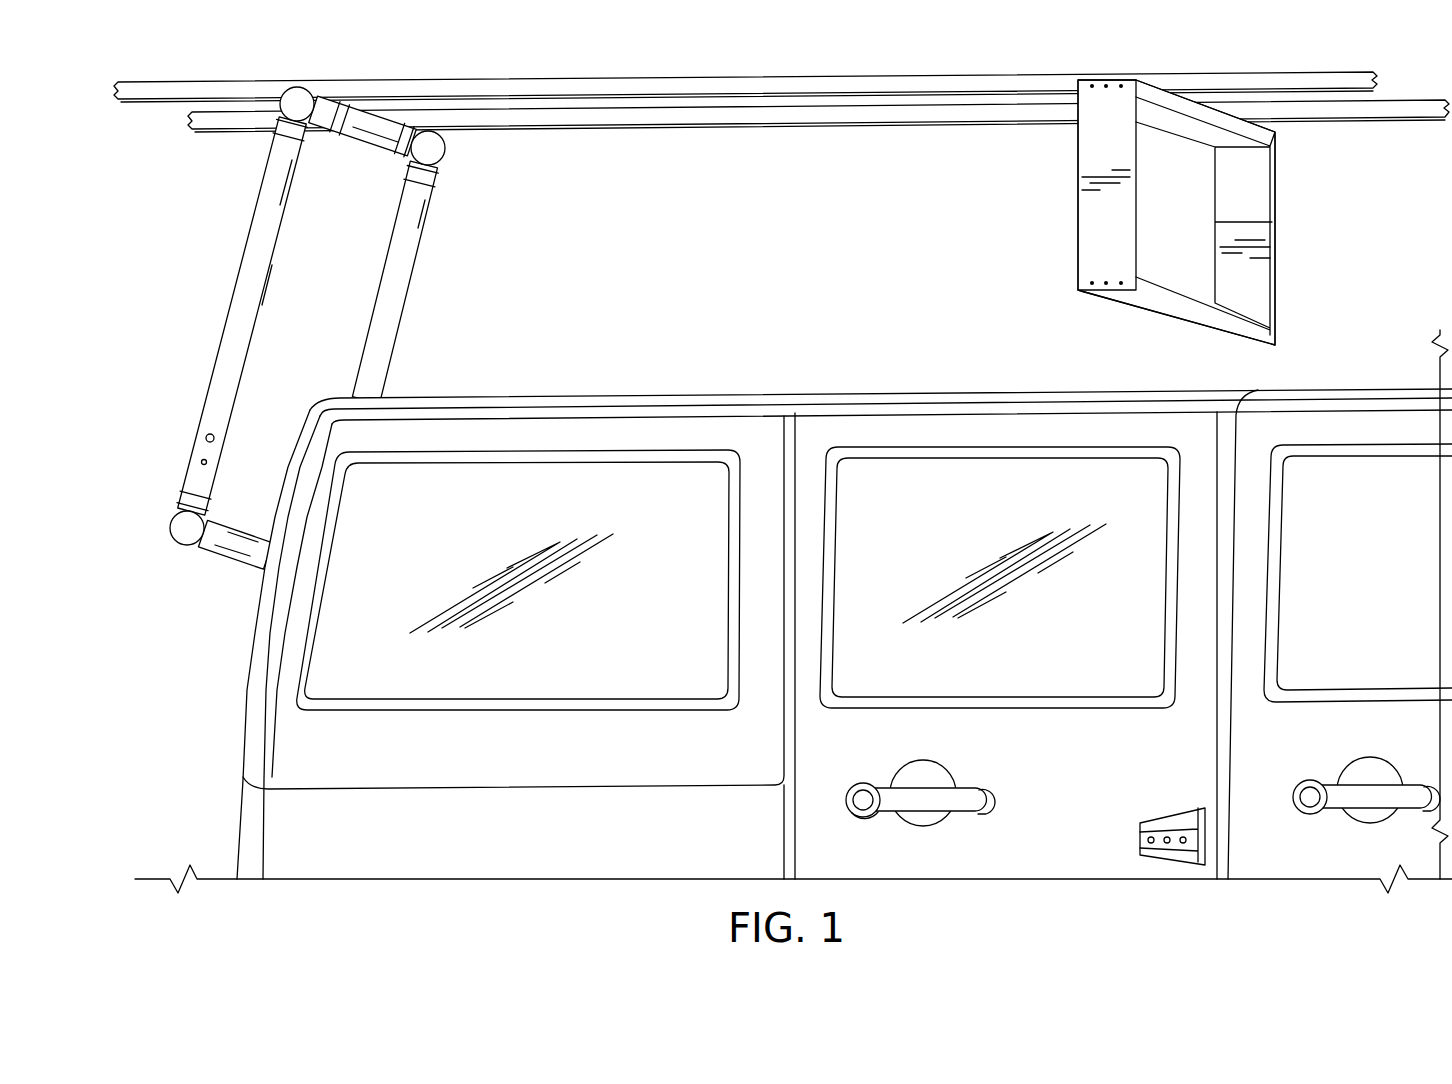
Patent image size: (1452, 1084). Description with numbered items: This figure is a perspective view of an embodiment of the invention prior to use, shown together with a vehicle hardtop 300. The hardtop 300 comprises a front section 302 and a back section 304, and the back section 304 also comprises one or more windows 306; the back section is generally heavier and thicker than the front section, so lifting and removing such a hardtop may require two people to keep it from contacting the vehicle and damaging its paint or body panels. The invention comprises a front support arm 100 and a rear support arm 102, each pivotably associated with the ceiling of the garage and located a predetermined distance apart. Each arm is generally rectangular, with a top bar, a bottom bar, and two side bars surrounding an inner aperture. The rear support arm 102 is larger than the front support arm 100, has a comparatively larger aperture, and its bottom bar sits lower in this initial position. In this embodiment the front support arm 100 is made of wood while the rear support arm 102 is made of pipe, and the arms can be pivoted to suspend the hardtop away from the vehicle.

The front support arm 100 is at (1278, 251).
The rear support arm 102 is at (228, 308).
The hardtop 300 is at (497, 791).
The front section 302 is at (1031, 391).
The back section 304 is at (240, 722).
The window 306 is at (596, 680).